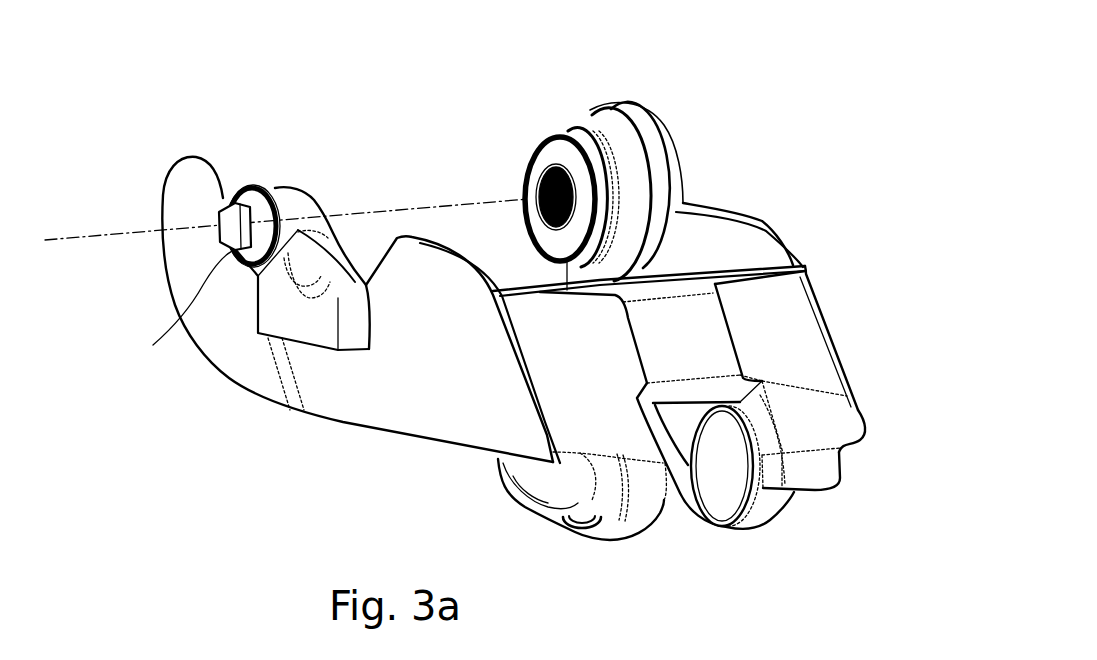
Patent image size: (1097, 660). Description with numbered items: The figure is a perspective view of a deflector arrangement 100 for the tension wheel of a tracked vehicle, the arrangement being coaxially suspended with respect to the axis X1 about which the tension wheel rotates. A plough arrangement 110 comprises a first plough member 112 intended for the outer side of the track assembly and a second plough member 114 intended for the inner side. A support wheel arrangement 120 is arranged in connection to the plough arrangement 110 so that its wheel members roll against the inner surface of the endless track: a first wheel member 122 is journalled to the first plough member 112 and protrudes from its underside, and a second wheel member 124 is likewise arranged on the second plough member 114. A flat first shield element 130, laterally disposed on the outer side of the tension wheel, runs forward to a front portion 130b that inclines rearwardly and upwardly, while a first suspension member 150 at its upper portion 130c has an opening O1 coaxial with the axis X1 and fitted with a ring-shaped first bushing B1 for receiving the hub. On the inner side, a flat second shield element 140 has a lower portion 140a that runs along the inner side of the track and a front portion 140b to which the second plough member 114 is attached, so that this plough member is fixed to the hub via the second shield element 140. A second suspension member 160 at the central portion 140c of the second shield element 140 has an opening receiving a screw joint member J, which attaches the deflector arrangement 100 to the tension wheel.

The deflector arrangement 100 is at (343, 89).
The plough arrangement 110 is at (752, 326).
The first plough member 112 is at (826, 416).
The second plough member 114 is at (567, 432).
The support wheel arrangement 120 is at (753, 507).
The first wheel member 122 is at (768, 530).
The second wheel member 124 is at (620, 541).
The first shield element 130 is at (698, 160).
The front portion 130b is at (788, 238).
The upper portion 130c is at (638, 108).
The second shield element 140 is at (483, 339).
The lower portion 140a is at (349, 423).
The front portion 140b is at (487, 274).
The central portion 140c is at (373, 268).
The first suspension member 150 is at (517, 156).
The second suspension member 160 is at (276, 186).
The first bushing B1 is at (548, 161).
The opening O1 is at (540, 199).
The axis X1 is at (140, 234).
The screw joint member J is at (181, 306).